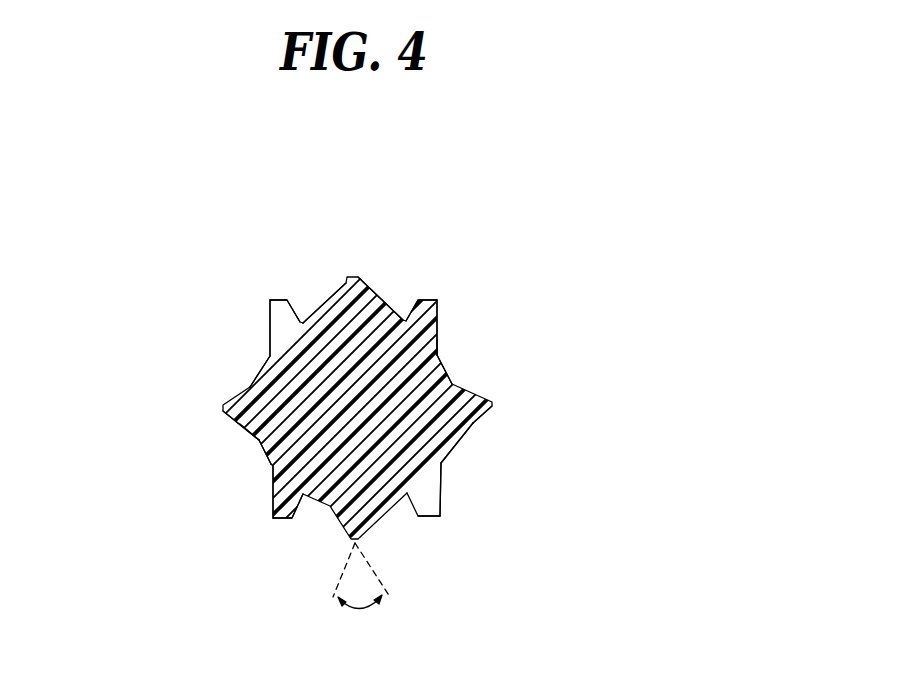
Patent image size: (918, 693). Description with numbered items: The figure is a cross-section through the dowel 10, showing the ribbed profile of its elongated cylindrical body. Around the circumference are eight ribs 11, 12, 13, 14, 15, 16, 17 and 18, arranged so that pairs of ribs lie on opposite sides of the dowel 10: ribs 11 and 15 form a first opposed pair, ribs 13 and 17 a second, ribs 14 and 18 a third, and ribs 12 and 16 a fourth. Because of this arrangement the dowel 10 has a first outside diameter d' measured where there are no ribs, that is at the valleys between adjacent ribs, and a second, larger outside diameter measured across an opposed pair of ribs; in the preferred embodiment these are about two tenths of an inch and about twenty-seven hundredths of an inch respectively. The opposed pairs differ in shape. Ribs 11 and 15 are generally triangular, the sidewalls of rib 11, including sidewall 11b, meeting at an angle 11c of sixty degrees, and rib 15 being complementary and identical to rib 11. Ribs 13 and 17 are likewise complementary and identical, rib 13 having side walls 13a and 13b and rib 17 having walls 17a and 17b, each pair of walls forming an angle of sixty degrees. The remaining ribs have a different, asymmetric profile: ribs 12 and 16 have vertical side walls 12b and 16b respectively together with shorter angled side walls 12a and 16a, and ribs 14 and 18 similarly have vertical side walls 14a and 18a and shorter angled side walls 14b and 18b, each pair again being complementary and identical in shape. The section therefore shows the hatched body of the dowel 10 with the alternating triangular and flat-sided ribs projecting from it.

The dowel 10 is at (396, 189).
The rib 11 is at (357, 290).
The sidewall 11b is at (337, 298).
The angle 11c is at (363, 608).
The rib 12 is at (437, 300).
The angled side wall 12a is at (414, 300).
The vertical side wall 12b is at (437, 326).
The rib 13 is at (490, 402).
The side wall 13a is at (450, 387).
The side wall 13b is at (470, 424).
The rib 14 is at (442, 515).
The vertical side wall 14a is at (443, 468).
The angled side wall 14b is at (425, 518).
The rib 15 is at (328, 503).
The rib 16 is at (273, 518).
The angled side wall 16a is at (292, 520).
The vertical side wall 16b is at (273, 477).
The rib 17 is at (222, 411).
The wall 17a is at (250, 430).
The wall 17b is at (251, 387).
The rib 18 is at (276, 343).
The vertical side wall 18a is at (267, 305).
The angled side wall 18b is at (290, 302).
The first outside diameter d' is at (410, 412).